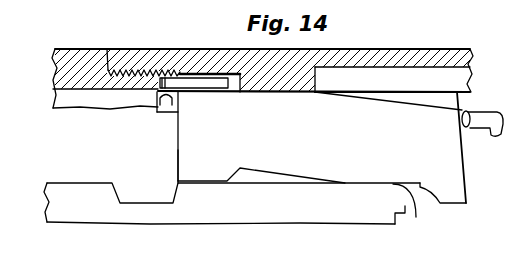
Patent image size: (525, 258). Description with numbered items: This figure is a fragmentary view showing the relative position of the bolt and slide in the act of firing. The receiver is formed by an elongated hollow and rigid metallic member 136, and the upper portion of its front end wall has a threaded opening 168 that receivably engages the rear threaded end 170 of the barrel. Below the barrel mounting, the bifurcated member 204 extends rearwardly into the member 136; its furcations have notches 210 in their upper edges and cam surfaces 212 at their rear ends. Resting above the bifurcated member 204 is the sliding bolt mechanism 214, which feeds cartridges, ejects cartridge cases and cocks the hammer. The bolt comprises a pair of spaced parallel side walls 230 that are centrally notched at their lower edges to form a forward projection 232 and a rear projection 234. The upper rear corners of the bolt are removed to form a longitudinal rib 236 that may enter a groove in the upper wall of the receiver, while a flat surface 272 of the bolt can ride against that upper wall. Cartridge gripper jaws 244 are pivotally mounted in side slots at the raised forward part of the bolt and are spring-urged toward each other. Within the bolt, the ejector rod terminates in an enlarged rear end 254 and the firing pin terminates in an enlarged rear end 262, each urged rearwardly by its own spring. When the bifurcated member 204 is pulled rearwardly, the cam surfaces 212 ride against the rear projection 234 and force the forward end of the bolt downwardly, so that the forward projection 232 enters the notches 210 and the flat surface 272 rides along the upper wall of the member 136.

The hollow rigid metallic member 136 is at (394, 62).
The threaded opening 168 is at (152, 45).
The rear threaded end of barrel 170 is at (131, 84).
The cartridge gripper jaws 244 is at (197, 83).
The sliding bolt mechanism 214 is at (175, 133).
The forward projection 232 is at (192, 160).
The side wall 230 is at (262, 156).
The longitudinal rib 236 is at (443, 97).
The flat surface 272 is at (429, 102).
The enlarged rear end of firing pin 262 is at (469, 113).
The enlarged rear end of ejector rod 254 is at (486, 137).
The rear projection 234 is at (455, 197).
The notch 210 is at (121, 202).
The bifurcated member 204 is at (300, 213).
The cam surface 212 is at (417, 215).